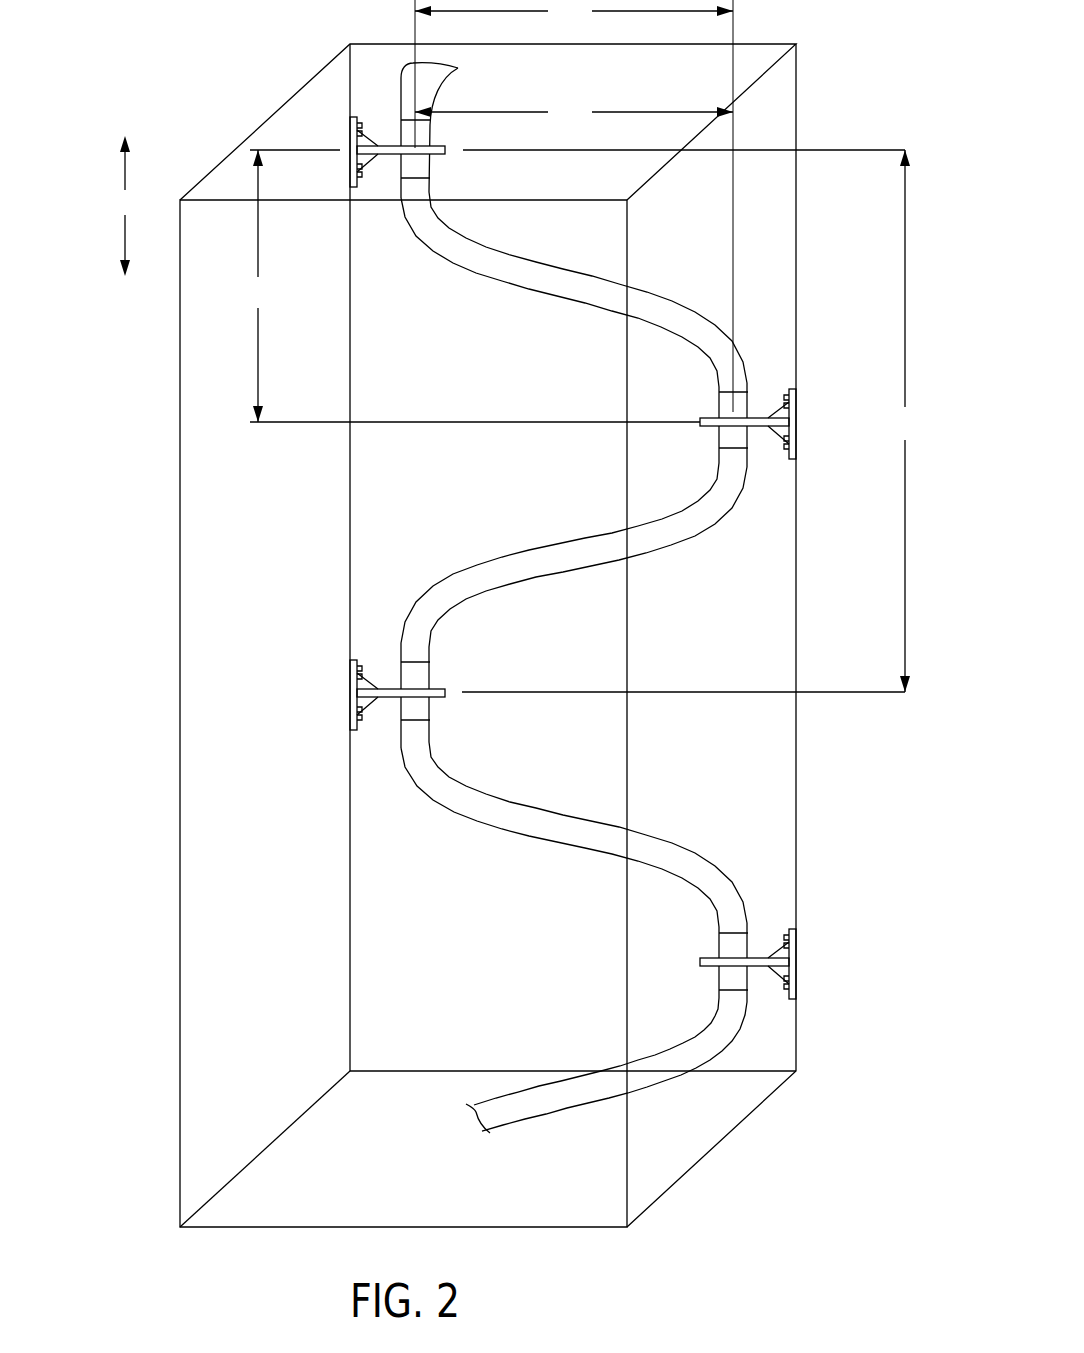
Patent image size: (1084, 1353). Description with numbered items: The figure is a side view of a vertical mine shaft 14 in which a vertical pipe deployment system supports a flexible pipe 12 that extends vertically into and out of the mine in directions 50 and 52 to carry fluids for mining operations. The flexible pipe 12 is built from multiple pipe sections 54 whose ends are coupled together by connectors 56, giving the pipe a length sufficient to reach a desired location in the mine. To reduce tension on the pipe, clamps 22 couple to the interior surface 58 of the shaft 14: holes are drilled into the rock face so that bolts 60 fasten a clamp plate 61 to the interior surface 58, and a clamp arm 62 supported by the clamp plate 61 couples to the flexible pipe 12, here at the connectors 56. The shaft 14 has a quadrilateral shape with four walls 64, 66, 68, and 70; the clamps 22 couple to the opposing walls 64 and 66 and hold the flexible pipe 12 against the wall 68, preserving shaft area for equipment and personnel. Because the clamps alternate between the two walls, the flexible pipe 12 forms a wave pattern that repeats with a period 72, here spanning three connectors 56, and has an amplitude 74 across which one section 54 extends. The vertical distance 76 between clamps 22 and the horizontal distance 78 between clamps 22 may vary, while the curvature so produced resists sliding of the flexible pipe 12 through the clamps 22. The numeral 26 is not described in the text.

The flexible pipe 12 is at (856, 615).
The vertical mine shaft 14 is at (180, 925).
The clamp 22 is at (352, 151).
The tube assembly 26 is at (882, 54).
The direction 50 is at (124, 238).
The direction 52 is at (124, 170).
The pipe section 54 is at (442, 88).
The connector 56 is at (437, 163).
The interior surface 58 is at (208, 822).
The bolt 60 is at (352, 118).
The clamp plate 61 is at (357, 132).
The clamp arm 62 is at (450, 147).
The wall 64 is at (200, 608).
The wall 66 is at (795, 745).
The wall 68 is at (461, 486).
The wall 70 is at (305, 1227).
The period 72 is at (693, 421).
The amplitude 74 is at (574, 206).
The vertical distance 76 is at (470, 286).
The horizontal distance 78 is at (574, 112).